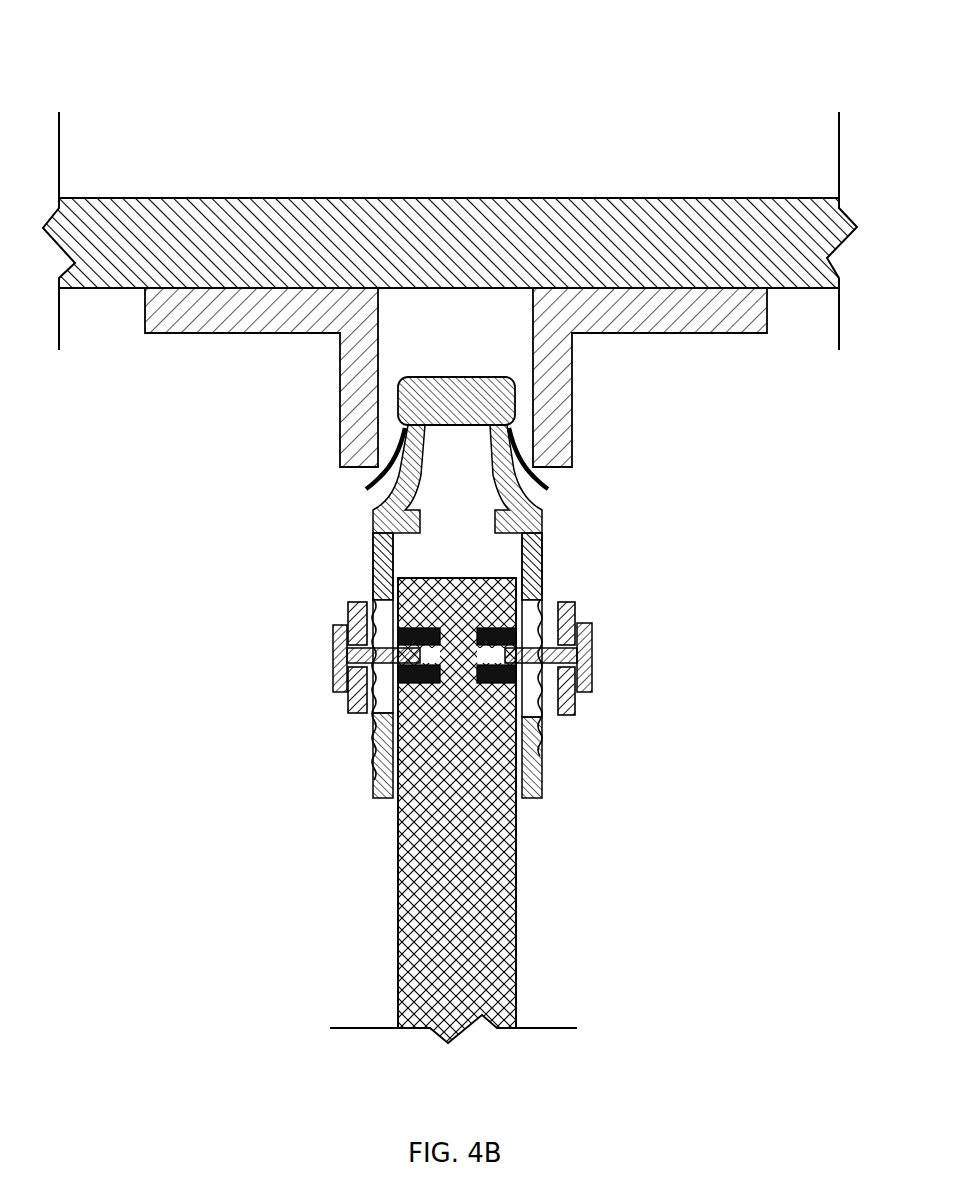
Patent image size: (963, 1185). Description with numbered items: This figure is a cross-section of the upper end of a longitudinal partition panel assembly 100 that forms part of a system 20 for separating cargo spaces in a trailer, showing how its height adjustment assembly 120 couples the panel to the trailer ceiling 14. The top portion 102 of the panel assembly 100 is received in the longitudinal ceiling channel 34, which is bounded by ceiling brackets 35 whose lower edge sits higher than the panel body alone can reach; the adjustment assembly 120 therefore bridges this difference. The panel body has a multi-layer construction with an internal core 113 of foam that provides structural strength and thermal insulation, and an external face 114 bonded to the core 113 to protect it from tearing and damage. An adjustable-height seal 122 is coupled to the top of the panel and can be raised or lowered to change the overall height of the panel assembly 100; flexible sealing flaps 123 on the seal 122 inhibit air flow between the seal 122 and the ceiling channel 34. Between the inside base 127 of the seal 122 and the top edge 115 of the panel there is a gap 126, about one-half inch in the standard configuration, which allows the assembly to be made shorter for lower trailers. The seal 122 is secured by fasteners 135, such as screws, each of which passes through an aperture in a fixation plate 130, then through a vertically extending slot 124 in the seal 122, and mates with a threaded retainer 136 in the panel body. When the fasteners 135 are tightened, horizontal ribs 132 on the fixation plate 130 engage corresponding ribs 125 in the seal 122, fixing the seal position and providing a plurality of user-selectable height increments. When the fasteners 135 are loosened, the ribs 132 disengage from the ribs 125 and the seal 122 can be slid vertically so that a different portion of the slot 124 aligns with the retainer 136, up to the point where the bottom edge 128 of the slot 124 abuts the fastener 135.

The system 20 is at (70, 52).
The ceiling 14 is at (495, 242).
The ceiling brackets 35 is at (640, 310).
The longitudinal ceiling channel 34 is at (645, 428).
The top portion 102 is at (482, 352).
The longitudinal partition panel assembly 100 is at (145, 436).
The height adjustment assembly 120 is at (246, 518).
The adjustable-height seal 122 is at (360, 538).
The flexible sealing flaps 123 is at (363, 489).
The vertically extending slot 124 is at (542, 607).
The ribs 125 is at (364, 776).
The gap 126 is at (483, 564).
The inside base 127 is at (505, 538).
The top edge 115 is at (428, 578).
The internal core 113 is at (455, 907).
The external face 114 is at (398, 933).
The fasteners 135 is at (333, 677).
The bottom edge 128 is at (377, 710).
The fixation plates 130 is at (575, 705).
The horizontal ribs 132 is at (556, 710).
The threaded retainer 136 is at (492, 683).